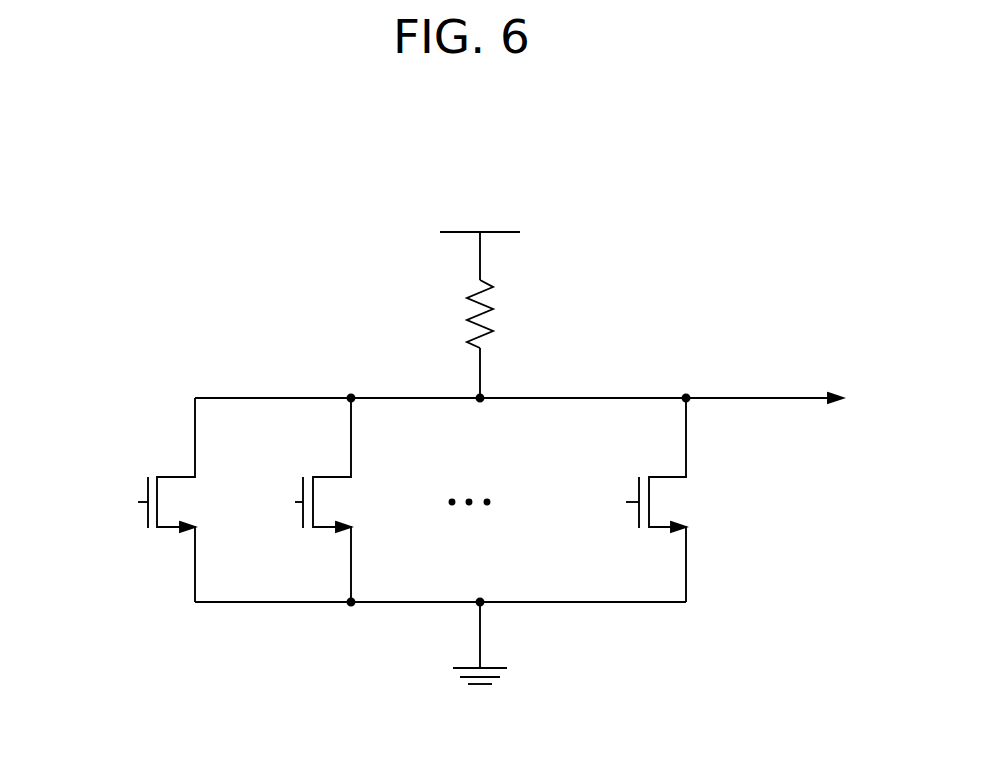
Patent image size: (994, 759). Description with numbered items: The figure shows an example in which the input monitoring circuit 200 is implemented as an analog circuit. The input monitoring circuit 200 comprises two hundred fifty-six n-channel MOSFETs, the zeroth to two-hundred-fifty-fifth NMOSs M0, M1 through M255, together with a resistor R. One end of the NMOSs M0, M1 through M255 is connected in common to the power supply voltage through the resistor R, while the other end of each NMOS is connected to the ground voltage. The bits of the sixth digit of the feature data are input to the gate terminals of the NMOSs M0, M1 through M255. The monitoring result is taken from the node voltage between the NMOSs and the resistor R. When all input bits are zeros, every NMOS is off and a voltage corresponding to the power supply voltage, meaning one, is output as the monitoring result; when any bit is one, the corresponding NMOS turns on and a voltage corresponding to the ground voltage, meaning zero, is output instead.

The input monitoring circuit 200 is at (767, 147).
The resistor R is at (480, 315).
The 0th NMOS M0 is at (135, 500).
The 1st NMOS M1 is at (289, 500).
The 255th NMOS M255 is at (623, 500).